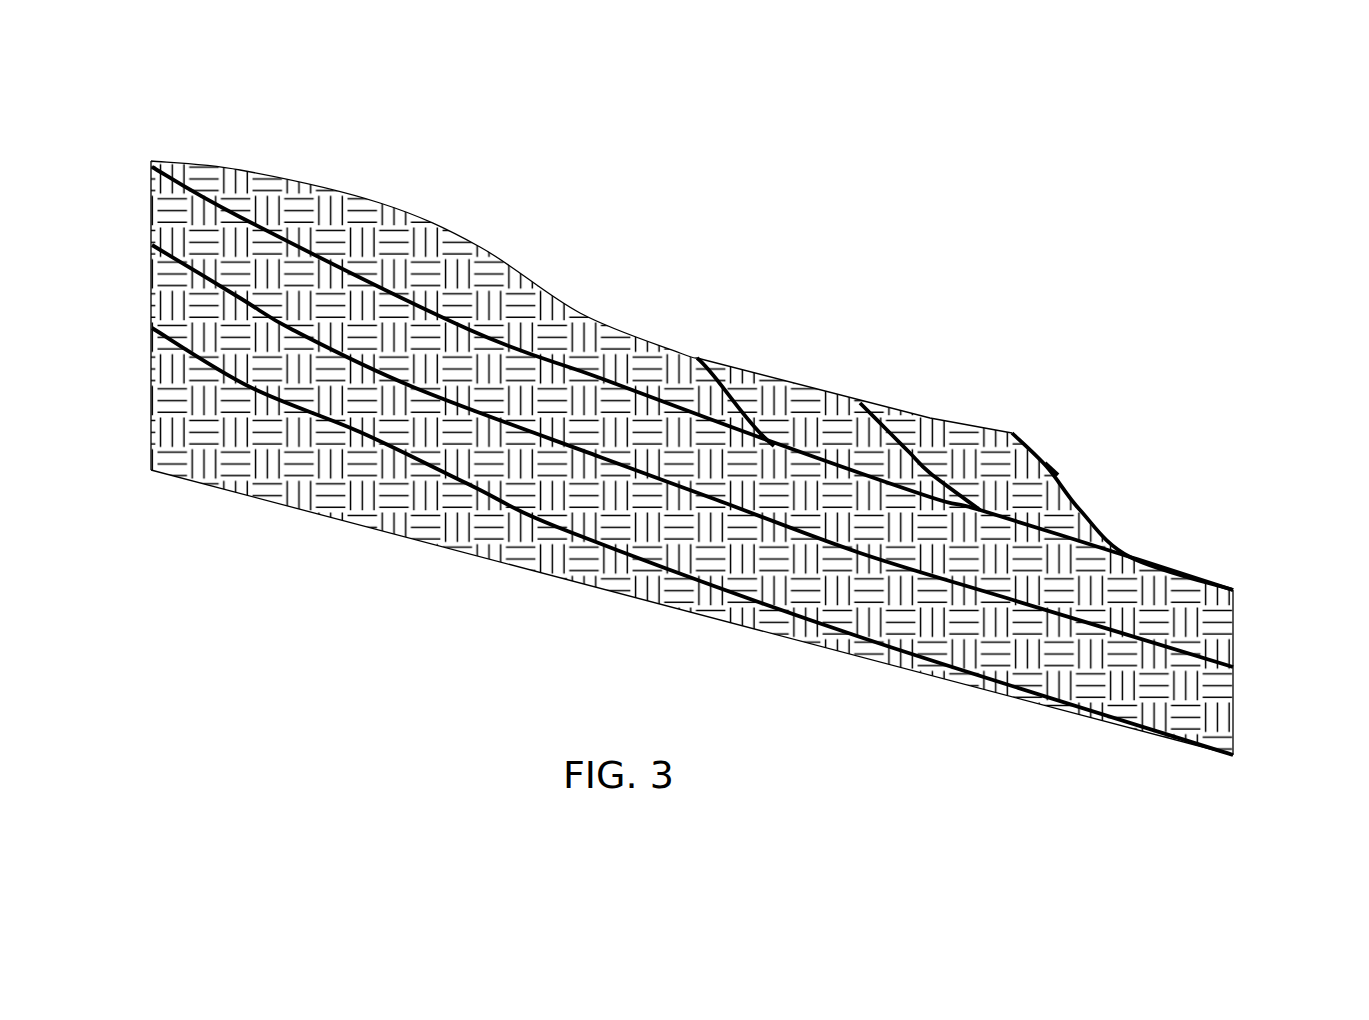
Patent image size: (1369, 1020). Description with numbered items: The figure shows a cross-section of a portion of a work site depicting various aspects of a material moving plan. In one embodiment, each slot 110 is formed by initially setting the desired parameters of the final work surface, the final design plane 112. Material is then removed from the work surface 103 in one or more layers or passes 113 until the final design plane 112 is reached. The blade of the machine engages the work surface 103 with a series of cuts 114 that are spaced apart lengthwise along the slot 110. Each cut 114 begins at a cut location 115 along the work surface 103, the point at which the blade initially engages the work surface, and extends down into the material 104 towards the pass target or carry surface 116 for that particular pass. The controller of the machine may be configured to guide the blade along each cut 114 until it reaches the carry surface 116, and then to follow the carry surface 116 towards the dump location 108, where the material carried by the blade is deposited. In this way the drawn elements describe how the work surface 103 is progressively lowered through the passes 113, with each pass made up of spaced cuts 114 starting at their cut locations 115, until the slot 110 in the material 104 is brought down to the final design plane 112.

The work surface 103 is at (418, 213).
The material 104 is at (288, 215).
The dump location 108 is at (1272, 588).
The slot 110 is at (1132, 453).
The final design plane 112 is at (262, 493).
The passes 113 is at (153, 323).
The cuts 114 is at (728, 390).
The cut location 115 is at (697, 358).
The carry surface 116 is at (1197, 742).